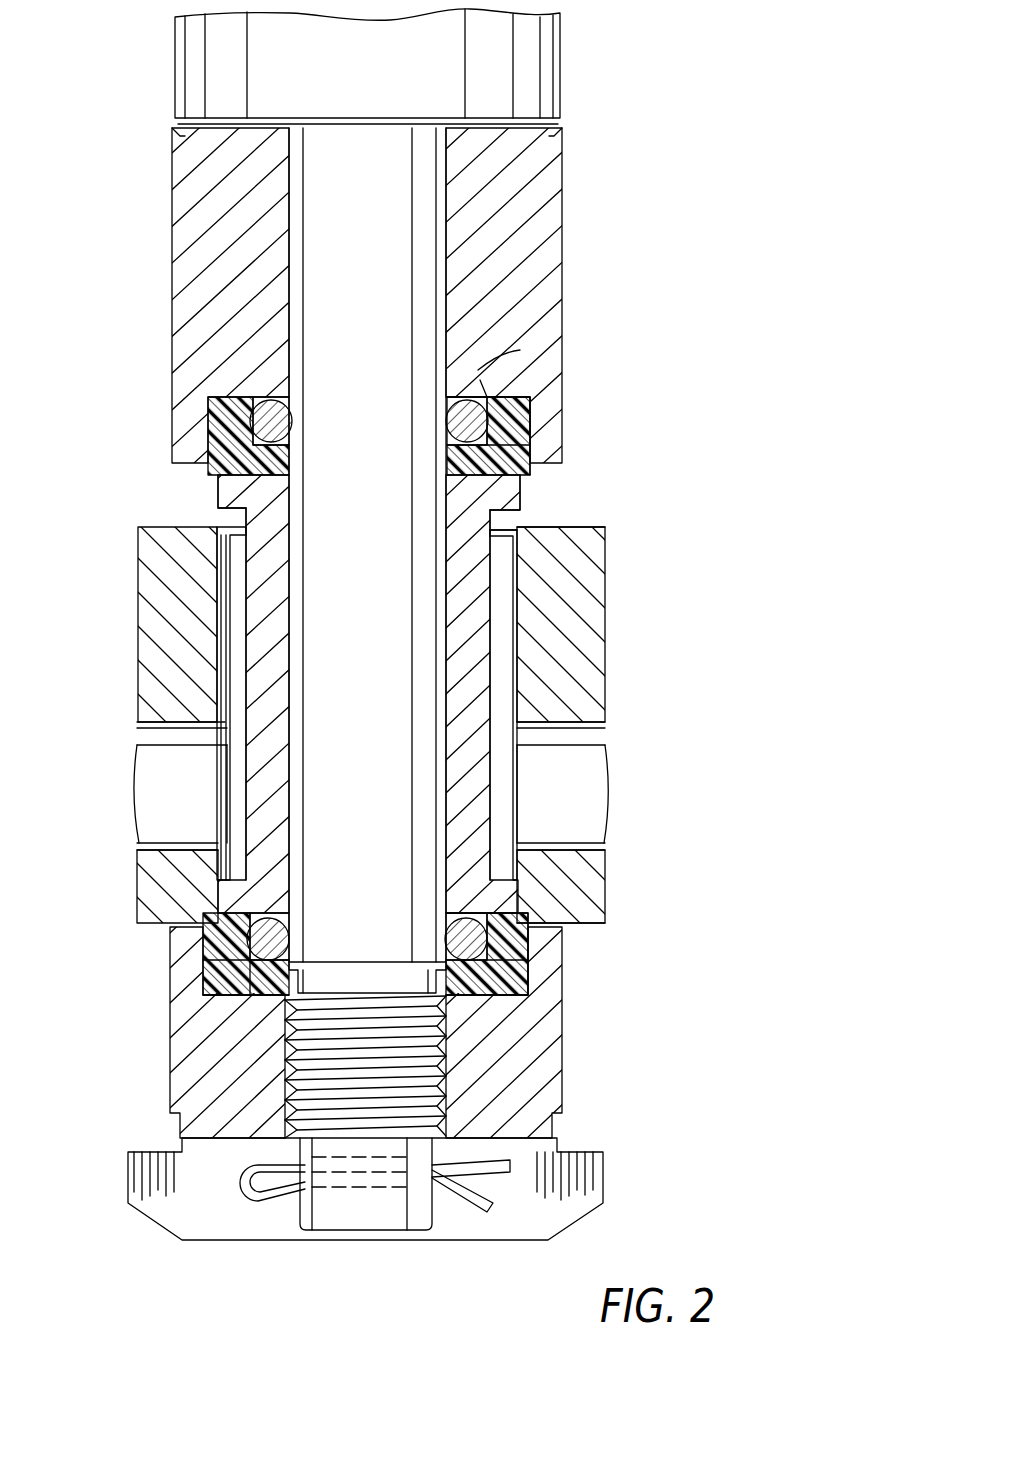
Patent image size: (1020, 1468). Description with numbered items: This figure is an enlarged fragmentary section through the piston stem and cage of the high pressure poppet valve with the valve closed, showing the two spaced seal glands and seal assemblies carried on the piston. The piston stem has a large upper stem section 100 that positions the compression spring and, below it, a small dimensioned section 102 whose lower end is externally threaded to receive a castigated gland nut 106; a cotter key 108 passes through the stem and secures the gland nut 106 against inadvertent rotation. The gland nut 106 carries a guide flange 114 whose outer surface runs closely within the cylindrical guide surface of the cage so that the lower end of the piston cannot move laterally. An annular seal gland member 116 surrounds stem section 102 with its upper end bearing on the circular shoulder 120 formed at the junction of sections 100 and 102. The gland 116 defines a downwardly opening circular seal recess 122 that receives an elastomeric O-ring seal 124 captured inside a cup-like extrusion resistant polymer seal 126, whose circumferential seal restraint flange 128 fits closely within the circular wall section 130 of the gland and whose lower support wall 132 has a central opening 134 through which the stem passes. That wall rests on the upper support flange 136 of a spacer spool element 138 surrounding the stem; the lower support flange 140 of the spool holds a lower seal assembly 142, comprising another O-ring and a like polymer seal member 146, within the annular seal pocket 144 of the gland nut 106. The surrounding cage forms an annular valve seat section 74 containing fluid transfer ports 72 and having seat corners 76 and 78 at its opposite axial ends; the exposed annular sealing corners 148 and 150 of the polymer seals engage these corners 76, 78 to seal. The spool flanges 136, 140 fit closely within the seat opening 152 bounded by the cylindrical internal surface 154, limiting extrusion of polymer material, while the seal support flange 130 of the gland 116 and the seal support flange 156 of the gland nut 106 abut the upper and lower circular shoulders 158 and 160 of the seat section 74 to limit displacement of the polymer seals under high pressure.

The upper stem section 100 is at (548, 62).
The small dimensioned piston stem section 102 is at (432, 200).
The castigated gland nut 106 is at (540, 1085).
The cotter key 108 is at (245, 1200).
The guide flange 114 is at (603, 1185).
The annular seal gland member 116 is at (528, 243).
The circular shoulder 120 is at (205, 130).
The circular seal recess 122 is at (532, 405).
The elastomeric O-ring seal 124 is at (480, 380).
The cup-like extrusion resistant seal 126 is at (532, 442).
The circumferential seal restraint flange 128 is at (210, 412).
The circular wall section 130 is at (210, 440).
The lower support wall 132 is at (240, 545).
The central opening 134 is at (445, 462).
The upper support flange 136 is at (222, 520).
The spacer spool element 138 is at (262, 672).
The lower support flange 140 is at (225, 887).
The lower seal assembly 142 is at (200, 975).
The annular seal pocket 144 is at (225, 995).
The polymer seal member 146 is at (512, 1000).
The annular sealing corner 148 is at (222, 478).
The annular sealing corner 150 is at (207, 915).
The seat opening 152 is at (512, 672).
The cylindrical internal surface 154 is at (512, 622).
The seal support flange 156 is at (178, 940).
The upper circular shoulder 158 is at (578, 522).
The lower circular shoulder 160 is at (592, 932).
The fluid transfer ports 72 is at (580, 760).
The annular valve seat section 74 is at (578, 570).
The seat corner 76 is at (532, 510).
The seat corner 78 is at (512, 968).